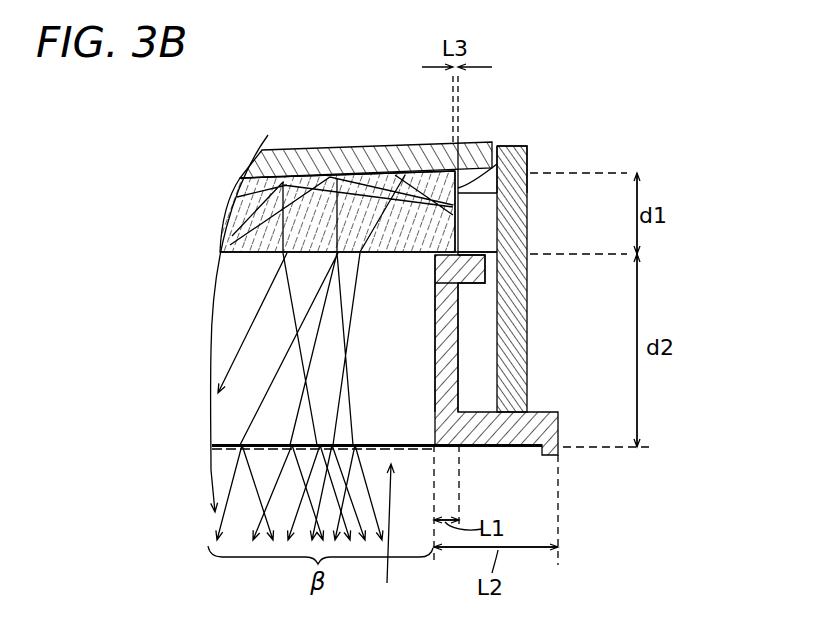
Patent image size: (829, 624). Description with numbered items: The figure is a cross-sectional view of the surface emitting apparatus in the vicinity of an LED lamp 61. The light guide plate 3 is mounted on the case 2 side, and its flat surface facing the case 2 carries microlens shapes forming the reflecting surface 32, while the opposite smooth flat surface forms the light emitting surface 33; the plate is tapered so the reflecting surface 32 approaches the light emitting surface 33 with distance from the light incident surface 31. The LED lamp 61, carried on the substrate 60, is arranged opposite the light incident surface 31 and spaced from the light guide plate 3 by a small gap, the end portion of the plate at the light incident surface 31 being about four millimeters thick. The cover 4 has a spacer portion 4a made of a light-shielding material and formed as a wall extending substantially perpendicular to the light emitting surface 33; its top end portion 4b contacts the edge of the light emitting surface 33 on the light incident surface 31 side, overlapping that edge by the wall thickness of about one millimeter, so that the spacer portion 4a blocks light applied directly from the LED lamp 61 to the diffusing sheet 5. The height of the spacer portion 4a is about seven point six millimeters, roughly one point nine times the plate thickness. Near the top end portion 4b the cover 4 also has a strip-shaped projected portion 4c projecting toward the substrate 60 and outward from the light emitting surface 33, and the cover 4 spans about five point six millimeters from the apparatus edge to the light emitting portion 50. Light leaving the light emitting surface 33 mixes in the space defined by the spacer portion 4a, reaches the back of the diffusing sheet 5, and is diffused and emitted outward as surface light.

The case 2 is at (268, 158).
The light guide plate 3 is at (227, 220).
The cover 4 is at (524, 313).
The spacer portion 4a is at (450, 370).
The top end portion 4b is at (458, 240).
The projected portion 4c is at (486, 268).
The diffusing sheet 5 is at (500, 452).
The light incident surface 31 is at (520, 146).
The reflecting surface 32 is at (292, 177).
The light emitting surface 33 is at (275, 250).
The light emitting portion 50 is at (388, 535).
The substrate 60 is at (530, 377).
The LED lamp 61 is at (482, 219).